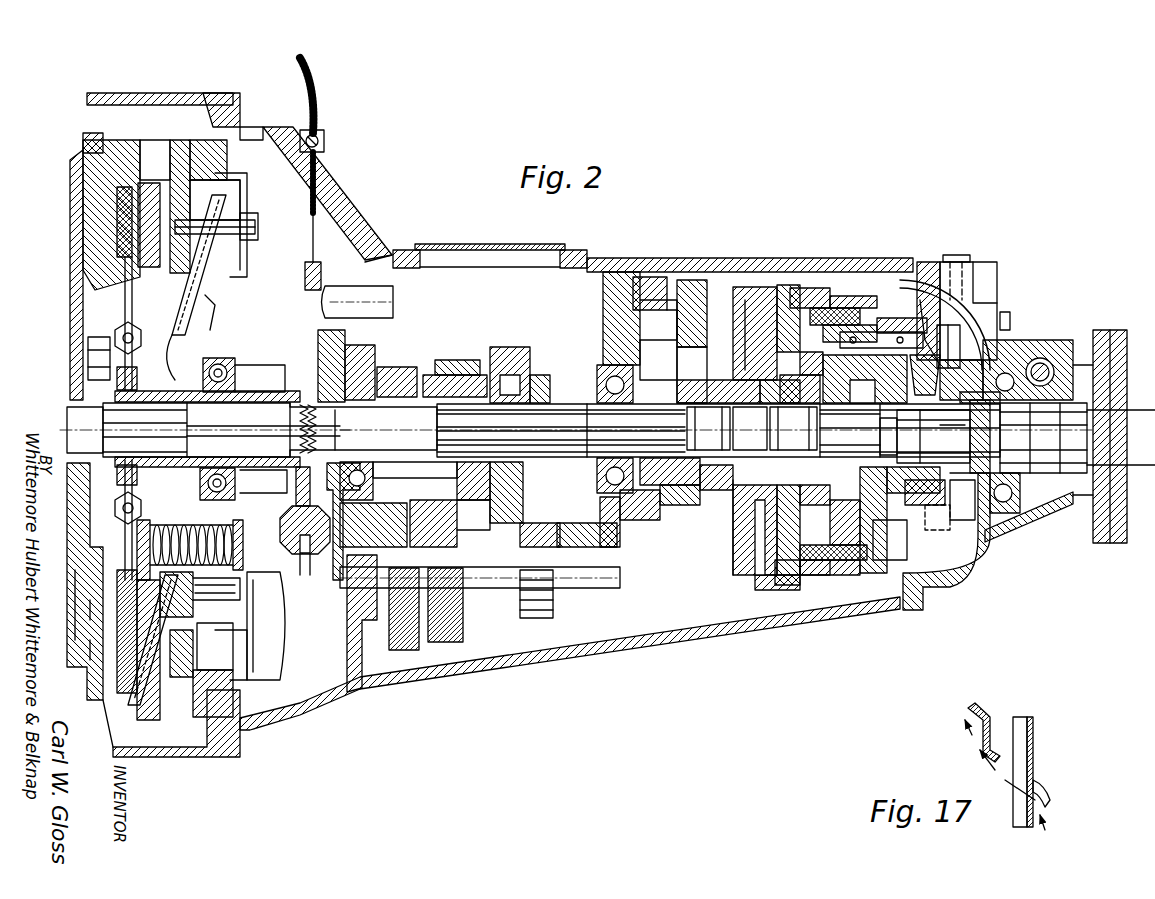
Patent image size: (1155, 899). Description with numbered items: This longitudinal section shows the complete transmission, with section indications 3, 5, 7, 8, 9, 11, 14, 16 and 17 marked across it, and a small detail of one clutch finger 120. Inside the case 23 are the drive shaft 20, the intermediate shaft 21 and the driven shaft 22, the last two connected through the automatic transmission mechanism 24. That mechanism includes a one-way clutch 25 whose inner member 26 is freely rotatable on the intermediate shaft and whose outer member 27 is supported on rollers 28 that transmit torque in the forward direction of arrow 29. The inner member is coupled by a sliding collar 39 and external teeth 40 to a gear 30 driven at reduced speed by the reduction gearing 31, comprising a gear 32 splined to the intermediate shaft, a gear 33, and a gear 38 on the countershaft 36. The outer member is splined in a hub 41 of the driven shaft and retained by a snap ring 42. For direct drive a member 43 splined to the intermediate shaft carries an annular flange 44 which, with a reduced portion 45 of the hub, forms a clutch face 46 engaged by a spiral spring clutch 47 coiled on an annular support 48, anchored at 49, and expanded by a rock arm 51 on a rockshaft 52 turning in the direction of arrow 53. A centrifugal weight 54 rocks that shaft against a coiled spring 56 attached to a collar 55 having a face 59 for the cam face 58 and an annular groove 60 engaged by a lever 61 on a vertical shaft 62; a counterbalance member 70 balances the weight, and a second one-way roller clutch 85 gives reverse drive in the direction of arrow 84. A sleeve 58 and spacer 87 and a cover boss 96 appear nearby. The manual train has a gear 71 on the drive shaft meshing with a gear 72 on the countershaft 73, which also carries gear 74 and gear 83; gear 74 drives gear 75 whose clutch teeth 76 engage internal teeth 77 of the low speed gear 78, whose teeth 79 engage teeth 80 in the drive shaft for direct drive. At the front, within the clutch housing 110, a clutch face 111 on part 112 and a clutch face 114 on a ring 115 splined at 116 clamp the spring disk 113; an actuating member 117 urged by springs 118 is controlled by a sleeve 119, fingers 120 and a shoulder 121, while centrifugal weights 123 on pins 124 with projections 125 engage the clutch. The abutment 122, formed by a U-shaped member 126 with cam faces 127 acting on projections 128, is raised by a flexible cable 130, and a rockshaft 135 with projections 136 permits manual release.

In FIG. 2, the section line 3- 3 is at (420, 230).
In FIG. 2, the section line 5- 5 is at (643, 222).
In FIG. 2, the section line 7- 7 is at (785, 227).
In FIG. 2, the section line 8- 8 is at (912, 240).
In FIG. 2, the section line 9- 9 is at (940, 235).
In FIG. 2, the section line 11- 11 is at (735, 355).
In FIG. 2, the section line 14- 14 is at (340, 325).
In FIG. 2, the section line 16- 16 is at (253, 223).
In FIG. 2, the section line 17- 17 is at (272, 315).
In FIG. 2, the drive shaft 20 is at (203, 430).
In FIG. 2, the intermediate shaft 21 is at (575, 458).
In FIG. 2, the driven shaft 22 is at (1072, 400).
In FIG. 2, the case 23 is at (692, 650).
In FIG. 2, the automatic transmission mechanism 24 is at (752, 258).
In FIG. 2, the one-way clutch 25 is at (757, 512).
In FIG. 2, the inner member 26 is at (748, 500).
In FIG. 2, the outer member 27 is at (788, 285).
In FIG. 2, the rollers 28 is at (772, 400).
In FIG. 2, the arrow 29 is at (718, 416).
In FIG. 2, the gear 30 is at (688, 505).
In FIG. 2, the reduction gearing 31 is at (680, 280).
In FIG. 2, the gear 32 is at (650, 495).
In FIG. 2, the gear 33 is at (600, 370).
In FIG. 2, the countershaft 36 is at (600, 305).
In FIG. 2, the gear 38 is at (697, 280).
In FIG. 2, the collar 39 is at (728, 488).
In FIG. 2, the external teeth 40 is at (725, 388).
In FIG. 2, the hub 41 is at (822, 290).
In FIG. 2, the snap ring 42 is at (762, 297).
In FIG. 2, the member 43 is at (778, 585).
In FIG. 2, the annular flange 44 is at (805, 578).
In FIG. 2, the reduced portion 45 is at (838, 565).
In FIG. 2, the clutch face 46 is at (840, 310).
In FIG. 2, the spring clutch 47 is at (870, 305).
In FIG. 2, the annular support 48 is at (876, 572).
In FIG. 2, the anchor 49 is at (872, 322).
In FIG. 2, the rock arm 51 is at (763, 335).
In FIG. 2, the rockshaft 52 is at (908, 348).
In FIG. 2, the arrow 53 is at (881, 338).
In FIG. 2, the centrifugal weight 54 is at (923, 330).
In FIG. 2, the collar 55 is at (948, 530).
In FIG. 2, the coiled spring 56 is at (940, 350).
In FIG. 2, the cam face 58 is at (933, 436).
In FIG. 2, the face 59 is at (952, 432).
In FIG. 2, the annular groove 60 is at (950, 508).
In FIG. 2, the lever 61 is at (1004, 312).
In FIG. 2, the vertical shaft 62 is at (968, 258).
In FIG. 2, the counterbalance member 70 is at (908, 612).
In FIG. 2, the gear 71 is at (400, 370).
In FIG. 2, the gear 72 is at (402, 652).
In FIG. 2, the countershaft 73 is at (615, 583).
In FIG. 2, the gear 74 is at (464, 632).
In FIG. 2, the gear 75 is at (450, 372).
In FIG. 2, the external clutch teeth 76 is at (478, 360).
In FIG. 2, the internal clutch teeth 77 is at (508, 365).
In FIG. 2, the low speed gear 78 is at (522, 378).
In FIG. 2, the clutch teeth 79 is at (535, 385).
In FIG. 2, the internal clutch teeth 80 is at (458, 500).
In FIG. 2, the gear 83 is at (535, 620).
In FIG. 2, the arrow 84 is at (742, 422).
In FIG. 2, the second one-way roller clutch 85 is at (918, 500).
In FIG. 2, the spacer 87 is at (899, 436).
In FIG. 2, the cover boss 96 is at (372, 298).
In FIG. 2, the clutch housing 110 is at (245, 722).
In FIG. 2, the clutch face 111 is at (92, 655).
In FIG. 2, the part 112 is at (80, 635).
In FIG. 2, the spring disk 113 is at (124, 545).
In FIG. 2, the clutch face 114 is at (205, 250).
In FIG. 2, the ring 115 is at (130, 695).
In FIG. 2, the spline 116 is at (155, 722).
In FIG. 2, the actuating member 117 is at (210, 720).
In FIG. 2, the spring 118 is at (200, 522).
In FIG. 2, the sleeve 119 is at (245, 388).
In FIG. 2, the clutch finger 120 is at (215, 300).
In FIG. 17, the clutch finger 120 is at (990, 720).
In FIG. 2, the shoulder 121 is at (228, 205).
In FIG. 2, the abutment 122 is at (345, 350).
In FIG. 2, the centrifugal weight 123 is at (280, 625).
In FIG. 2, the pin 124 is at (200, 624).
In FIG. 2, the projection 125 is at (92, 608).
In FIG. 2, the inverted U-shaped member 126 is at (350, 370).
In FIG. 2, the cam face 127 is at (282, 520).
In FIG. 2, the projection 128 is at (298, 434).
In FIG. 2, the flexible cable 130 is at (313, 223).
In FIG. 2, the rockshaft 135 is at (299, 540).
In FIG. 2, the projection 136 is at (294, 490).